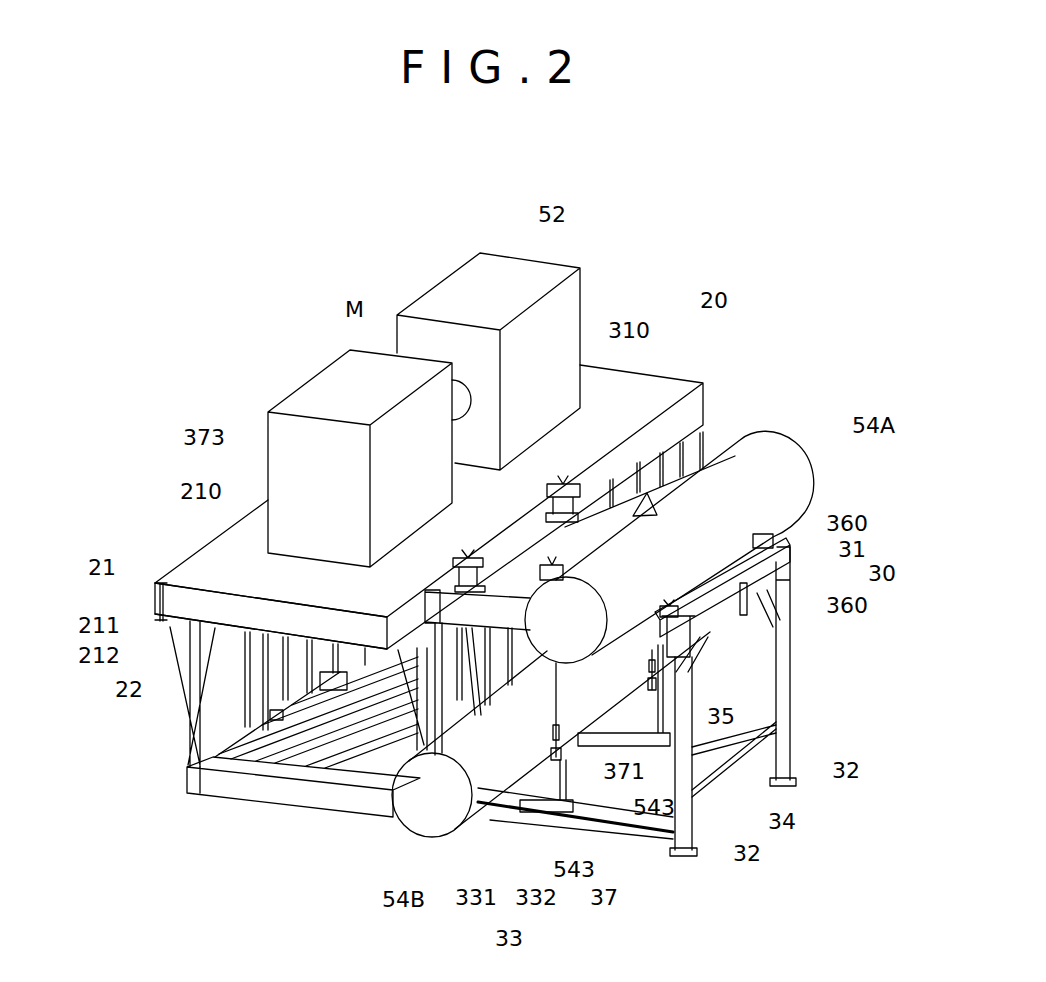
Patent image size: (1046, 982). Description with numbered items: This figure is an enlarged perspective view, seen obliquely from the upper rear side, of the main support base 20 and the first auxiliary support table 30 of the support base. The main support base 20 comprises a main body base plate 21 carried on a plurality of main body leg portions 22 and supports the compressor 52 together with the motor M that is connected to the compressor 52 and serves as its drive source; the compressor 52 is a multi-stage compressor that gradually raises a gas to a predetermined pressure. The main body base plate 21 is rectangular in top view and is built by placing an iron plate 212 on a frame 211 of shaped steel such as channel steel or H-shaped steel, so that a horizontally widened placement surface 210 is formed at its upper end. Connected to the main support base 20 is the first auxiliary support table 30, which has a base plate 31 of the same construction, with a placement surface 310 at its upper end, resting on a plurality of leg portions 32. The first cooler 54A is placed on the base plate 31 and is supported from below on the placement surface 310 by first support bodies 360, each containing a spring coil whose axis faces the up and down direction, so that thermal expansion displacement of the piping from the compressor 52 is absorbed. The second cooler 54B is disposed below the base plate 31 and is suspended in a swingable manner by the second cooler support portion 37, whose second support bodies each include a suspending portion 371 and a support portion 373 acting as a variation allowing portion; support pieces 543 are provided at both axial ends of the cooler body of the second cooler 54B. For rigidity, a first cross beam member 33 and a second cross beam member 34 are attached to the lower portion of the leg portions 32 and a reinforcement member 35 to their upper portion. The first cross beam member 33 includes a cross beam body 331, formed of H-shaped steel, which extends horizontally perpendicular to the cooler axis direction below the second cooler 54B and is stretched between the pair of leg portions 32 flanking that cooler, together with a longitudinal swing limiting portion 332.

The main support base 20 is at (426, 566).
The main body base plate 21 is at (410, 511).
The placement surface 210 is at (247, 535).
The frame 211 is at (175, 607).
The iron plate 212 is at (123, 658).
The main body leg portions 22 is at (372, 648).
The placement surface 310 is at (600, 528).
The compressor 52 is at (545, 272).
The motor M is at (352, 349).
The first auxiliary support table 30 is at (645, 723).
The base plate 31 is at (836, 551).
The leg portions 32 is at (828, 770).
The first cross beam member 33 is at (561, 855).
The cross beam body 331 is at (502, 812).
The longitudinal swing limiting portion 332 is at (575, 842).
The second cross beam member 34 is at (713, 777).
The reinforcement member 35 is at (706, 660).
The first support bodies 360 is at (676, 607).
The second cooler support portion 37 is at (453, 659).
The suspending portion 371 is at (630, 760).
The support portion 373 is at (237, 436).
The support pieces 543 is at (560, 672).
The first cooler 54A is at (850, 426).
The second cooler 54B is at (402, 885).